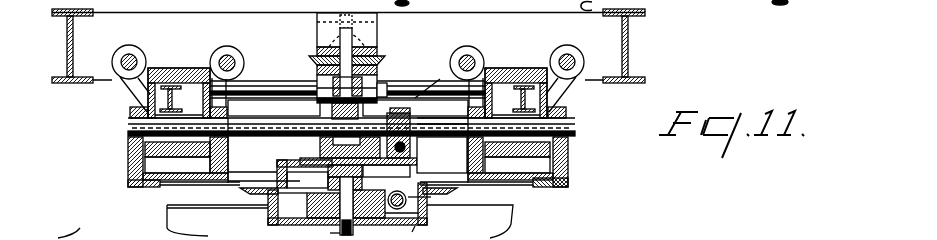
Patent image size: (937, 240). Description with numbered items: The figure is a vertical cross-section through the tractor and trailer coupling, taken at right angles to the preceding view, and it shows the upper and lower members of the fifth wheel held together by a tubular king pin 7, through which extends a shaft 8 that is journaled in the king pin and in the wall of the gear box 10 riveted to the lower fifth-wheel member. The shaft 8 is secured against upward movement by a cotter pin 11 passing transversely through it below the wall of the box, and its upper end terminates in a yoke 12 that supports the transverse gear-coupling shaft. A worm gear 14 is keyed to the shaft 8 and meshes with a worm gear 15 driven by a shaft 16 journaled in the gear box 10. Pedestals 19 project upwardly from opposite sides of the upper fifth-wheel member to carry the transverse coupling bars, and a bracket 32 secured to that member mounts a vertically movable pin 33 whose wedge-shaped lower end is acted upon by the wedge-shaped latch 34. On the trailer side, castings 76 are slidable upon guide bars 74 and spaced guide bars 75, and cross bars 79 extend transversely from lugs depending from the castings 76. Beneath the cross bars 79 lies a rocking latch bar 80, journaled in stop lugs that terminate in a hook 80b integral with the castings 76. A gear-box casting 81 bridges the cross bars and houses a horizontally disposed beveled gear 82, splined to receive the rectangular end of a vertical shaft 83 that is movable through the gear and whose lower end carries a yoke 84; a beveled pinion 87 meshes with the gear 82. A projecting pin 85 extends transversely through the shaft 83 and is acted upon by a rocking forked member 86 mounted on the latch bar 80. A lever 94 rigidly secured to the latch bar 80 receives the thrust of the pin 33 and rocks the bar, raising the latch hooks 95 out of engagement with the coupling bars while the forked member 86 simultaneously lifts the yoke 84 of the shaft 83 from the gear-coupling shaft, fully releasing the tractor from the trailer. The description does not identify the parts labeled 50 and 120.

The frame I-beam 50 is at (348, 46).
The guide bars 74 is at (112, 63).
The guide bars 75 is at (244, 60).
The slidable castings 76 is at (190, 68).
The latch hooks 95 is at (347, 99).
The rocking forked member 86 is at (320, 103).
The beveled pinion 87 is at (322, 43).
The gear-box casting 81 is at (317, 53).
The beveled gear 82 is at (378, 62).
The cross bars 79 is at (306, 82).
The vertical shaft 83 is at (356, 54).
The projecting pin 85 is at (373, 100).
The yoke 84 is at (393, 98).
The lever 94 is at (432, 82).
The pedestals 19 is at (128, 158).
The rocking latch bar 80 is at (128, 172).
The hook 80b is at (572, 150).
The block 120 is at (347, 157).
The yoke 12 is at (322, 143).
The tubular king pin 7 is at (325, 158).
The vertically movable pin 33 is at (416, 123).
The bracket 32 is at (442, 154).
The wedge-shaped latch 34 is at (442, 142).
The worm gear 14 is at (347, 204).
The worm gear 15 is at (406, 205).
The shaft 16 is at (428, 197).
The shaft 8 is at (355, 233).
The cotter pin 11 is at (327, 233).
The gear box 10 is at (416, 233).